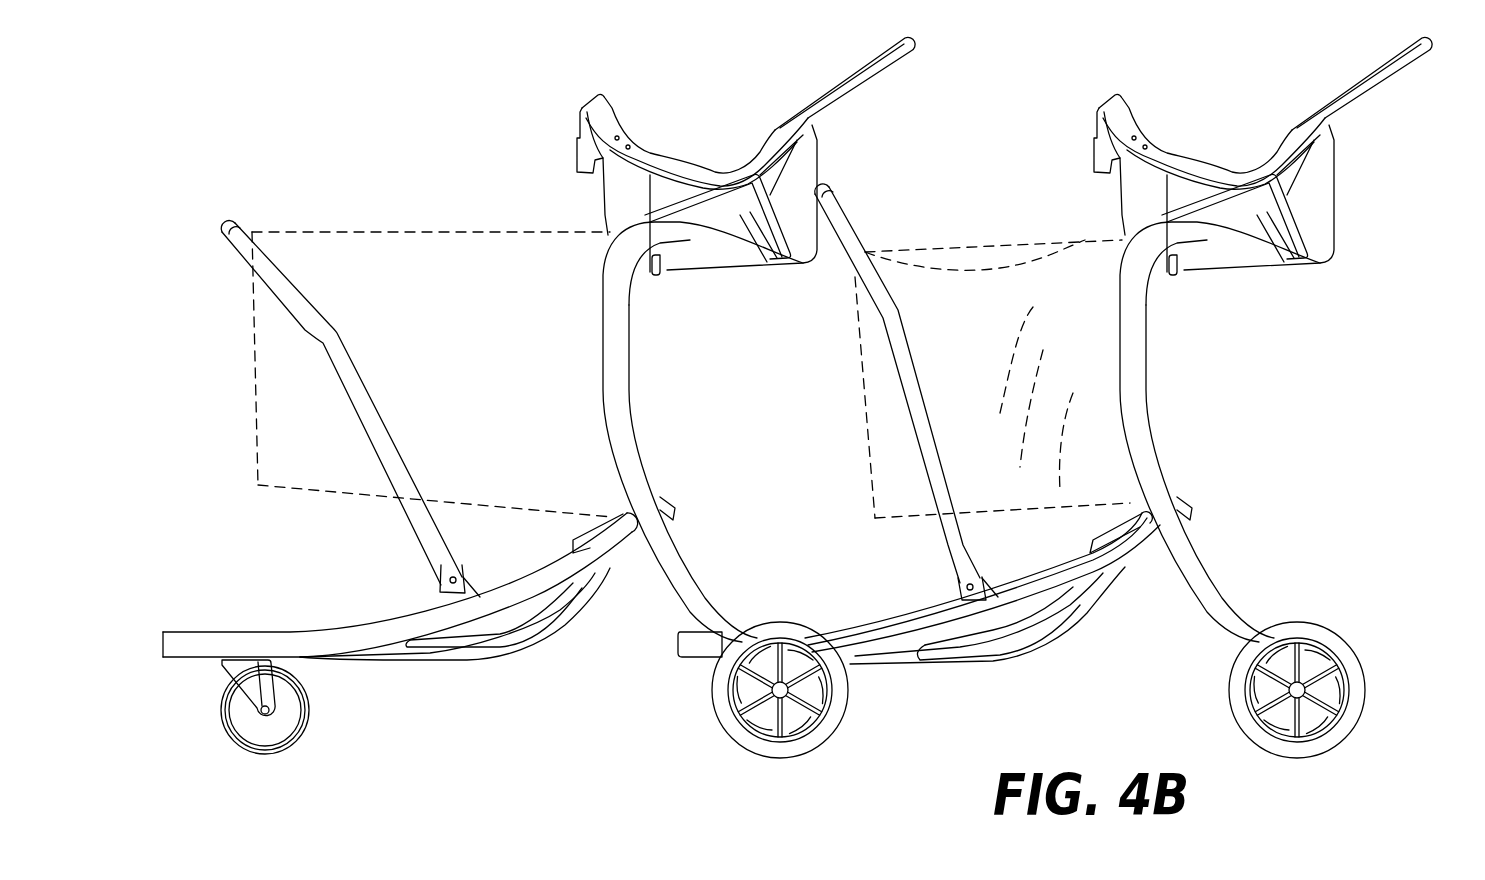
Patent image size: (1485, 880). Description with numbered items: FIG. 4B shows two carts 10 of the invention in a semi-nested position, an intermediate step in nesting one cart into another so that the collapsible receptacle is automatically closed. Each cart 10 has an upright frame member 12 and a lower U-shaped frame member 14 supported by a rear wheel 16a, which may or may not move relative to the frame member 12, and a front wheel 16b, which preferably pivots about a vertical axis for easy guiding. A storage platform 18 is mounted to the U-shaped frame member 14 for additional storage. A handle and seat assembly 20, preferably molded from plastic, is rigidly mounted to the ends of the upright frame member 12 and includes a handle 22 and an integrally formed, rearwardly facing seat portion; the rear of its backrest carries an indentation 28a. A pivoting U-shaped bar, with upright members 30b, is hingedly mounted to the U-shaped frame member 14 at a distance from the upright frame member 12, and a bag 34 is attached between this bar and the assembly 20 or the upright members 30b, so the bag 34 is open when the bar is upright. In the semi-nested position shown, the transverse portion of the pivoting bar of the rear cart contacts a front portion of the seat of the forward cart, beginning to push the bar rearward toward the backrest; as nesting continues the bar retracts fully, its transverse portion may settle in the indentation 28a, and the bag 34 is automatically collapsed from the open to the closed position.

The cart 10 is at (406, 206).
The upright frame member 12 is at (633, 457).
The U-shaped frame member 14 is at (357, 642).
The rear wheel 16a is at (808, 727).
The front wheel 16b is at (310, 720).
The storage platform 18 is at (1015, 655).
The handle and seat assembly 20 is at (831, 131).
The handle 22 is at (913, 47).
The indentation 28a is at (604, 203).
The upright member 30b is at (418, 518).
The bag 34 is at (493, 262).